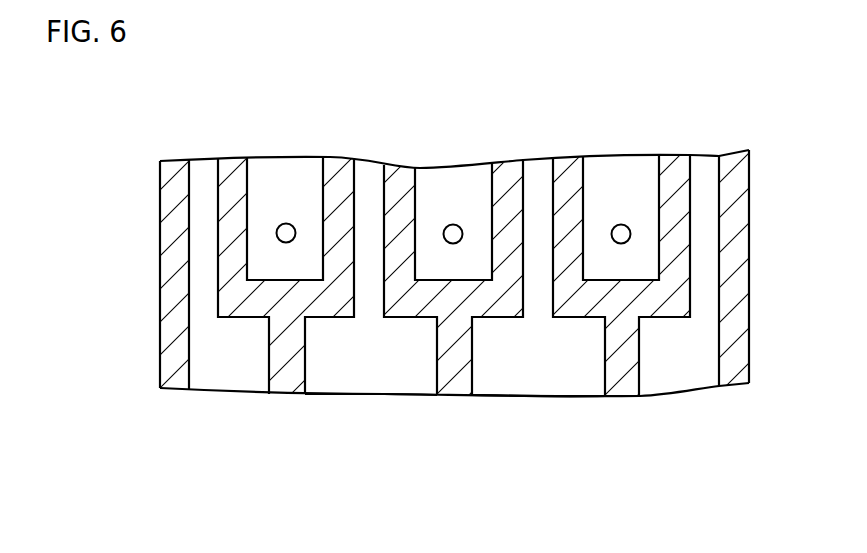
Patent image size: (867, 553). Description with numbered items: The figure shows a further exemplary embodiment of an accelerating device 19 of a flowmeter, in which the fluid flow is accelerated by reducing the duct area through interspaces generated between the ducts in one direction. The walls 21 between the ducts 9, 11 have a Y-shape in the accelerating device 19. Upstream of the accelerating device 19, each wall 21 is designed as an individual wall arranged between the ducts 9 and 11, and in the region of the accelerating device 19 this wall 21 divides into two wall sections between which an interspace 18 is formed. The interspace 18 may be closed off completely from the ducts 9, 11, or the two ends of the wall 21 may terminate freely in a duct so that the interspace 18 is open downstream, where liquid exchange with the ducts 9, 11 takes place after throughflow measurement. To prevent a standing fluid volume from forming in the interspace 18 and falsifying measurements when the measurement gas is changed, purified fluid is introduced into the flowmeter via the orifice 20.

The interspace 18 is at (433, 285).
The wall 21 is at (507, 187).
The orifice 20 is at (451, 224).
The accelerating device 19 is at (218, 317).
The duct 9 is at (366, 365).
The duct 11 is at (534, 363).